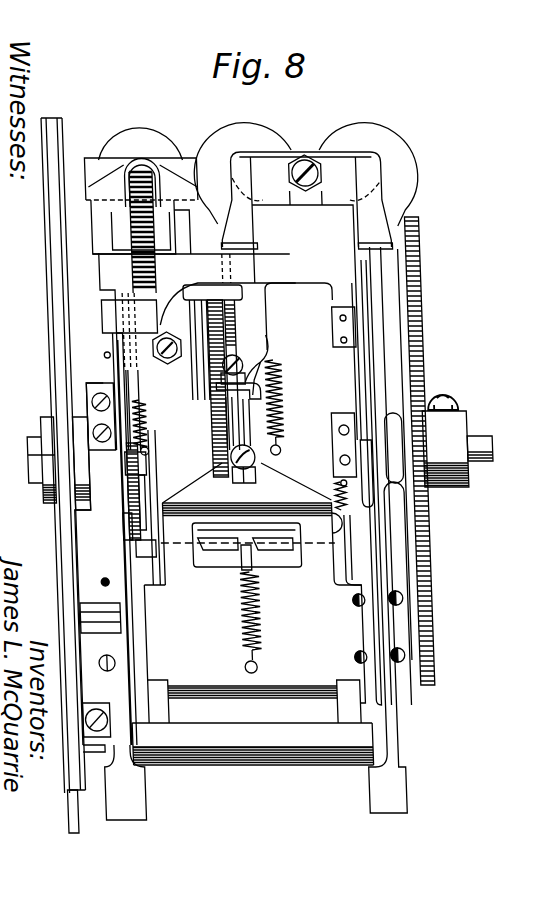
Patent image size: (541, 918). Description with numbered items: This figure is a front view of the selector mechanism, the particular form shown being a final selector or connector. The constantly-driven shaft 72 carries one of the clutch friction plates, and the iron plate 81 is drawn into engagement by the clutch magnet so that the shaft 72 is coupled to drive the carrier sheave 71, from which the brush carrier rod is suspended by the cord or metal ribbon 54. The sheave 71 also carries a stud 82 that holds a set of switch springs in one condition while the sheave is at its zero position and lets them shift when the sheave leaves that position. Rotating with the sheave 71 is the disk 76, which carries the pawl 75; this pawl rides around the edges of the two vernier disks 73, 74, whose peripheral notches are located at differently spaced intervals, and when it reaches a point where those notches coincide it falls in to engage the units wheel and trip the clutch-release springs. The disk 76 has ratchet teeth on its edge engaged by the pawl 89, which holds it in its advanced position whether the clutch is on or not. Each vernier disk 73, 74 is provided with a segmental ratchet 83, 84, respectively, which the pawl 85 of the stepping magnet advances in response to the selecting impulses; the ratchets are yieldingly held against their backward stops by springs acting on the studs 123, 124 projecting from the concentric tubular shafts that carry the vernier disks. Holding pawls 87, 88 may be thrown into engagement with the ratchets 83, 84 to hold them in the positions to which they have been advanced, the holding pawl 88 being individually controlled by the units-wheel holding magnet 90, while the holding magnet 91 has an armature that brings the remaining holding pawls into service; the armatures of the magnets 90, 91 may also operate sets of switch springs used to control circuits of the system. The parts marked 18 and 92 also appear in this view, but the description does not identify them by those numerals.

The ladder rod 18 is at (207, 432).
The cord or metal ribbon 54 is at (67, 822).
The carrier sheave 71 is at (53, 301).
The constantly-driven shaft 72 is at (483, 441).
The vernier disk 73 is at (218, 398).
The vernier disk 74 is at (222, 388).
The pawl 75 is at (211, 291).
The disk 76 is at (240, 318).
The friction plate 81 is at (248, 342).
The stud 82 is at (72, 622).
The segmental ratchet 83 is at (128, 445).
The segmental ratchet 84 is at (127, 486).
The pawl 85 is at (146, 463).
The holding pawl 87 is at (123, 332).
The holding pawl 88 is at (108, 352).
The pawl 89 is at (270, 416).
The units-wheel holding magnet 90 is at (155, 142).
The holding magnet 91 is at (348, 133).
The block 92 is at (306, 322).
The stud 123 is at (150, 427).
The stud 124 is at (130, 391).